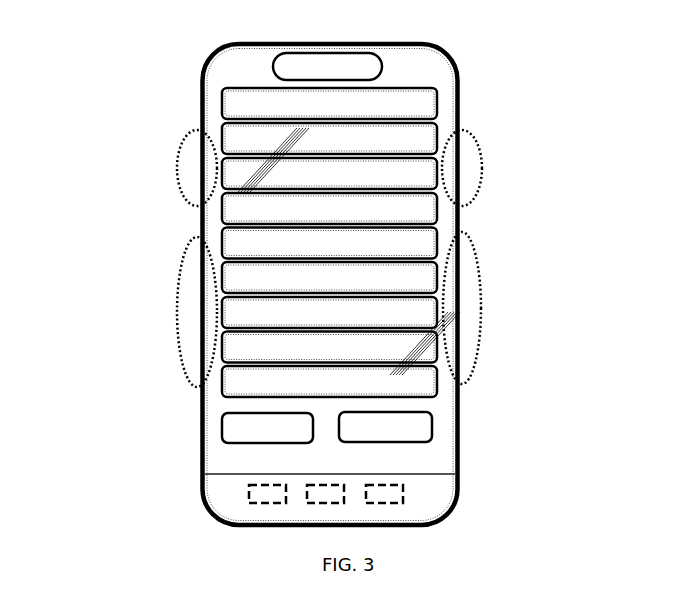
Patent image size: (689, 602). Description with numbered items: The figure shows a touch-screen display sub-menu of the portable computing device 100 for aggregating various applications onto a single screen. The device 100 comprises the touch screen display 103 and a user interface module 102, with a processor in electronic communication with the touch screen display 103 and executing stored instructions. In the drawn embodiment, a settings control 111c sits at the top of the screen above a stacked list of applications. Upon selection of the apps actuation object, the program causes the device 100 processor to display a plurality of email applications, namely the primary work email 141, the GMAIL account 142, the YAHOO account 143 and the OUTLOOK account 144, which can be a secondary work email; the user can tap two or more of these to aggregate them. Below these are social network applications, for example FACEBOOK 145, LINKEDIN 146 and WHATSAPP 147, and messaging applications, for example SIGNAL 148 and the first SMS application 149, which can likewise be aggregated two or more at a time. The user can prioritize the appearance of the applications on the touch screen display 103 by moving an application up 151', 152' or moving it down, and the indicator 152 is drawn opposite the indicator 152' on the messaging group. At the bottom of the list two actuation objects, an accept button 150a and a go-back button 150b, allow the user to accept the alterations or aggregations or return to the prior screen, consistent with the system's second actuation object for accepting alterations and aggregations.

The portable computing device 100 is at (460, 450).
The user interface module 102 is at (232, 493).
The touch screen display 103 is at (227, 457).
The settings button 111c is at (382, 70).
The primary work email 141 is at (410, 108).
The GMAIL account 142 is at (248, 138).
The YAHOO account 143 is at (422, 175).
The OUTLOOK account 144 is at (235, 212).
The FACEBOOK application 145 is at (428, 242).
The LINKEDIN application 146 is at (235, 280).
The WHATSAPP application 147 is at (422, 310).
The SIGNAL application 148 is at (235, 347).
The SMS 1 application 149 is at (408, 377).
The Accept button 150a is at (222, 428).
The Go Back button 150b is at (432, 425).
The moving up indicator 151' is at (125, 146).
The moving up indicator 152' is at (122, 310).
The messaging account group indicator (right) 152 is at (534, 293).